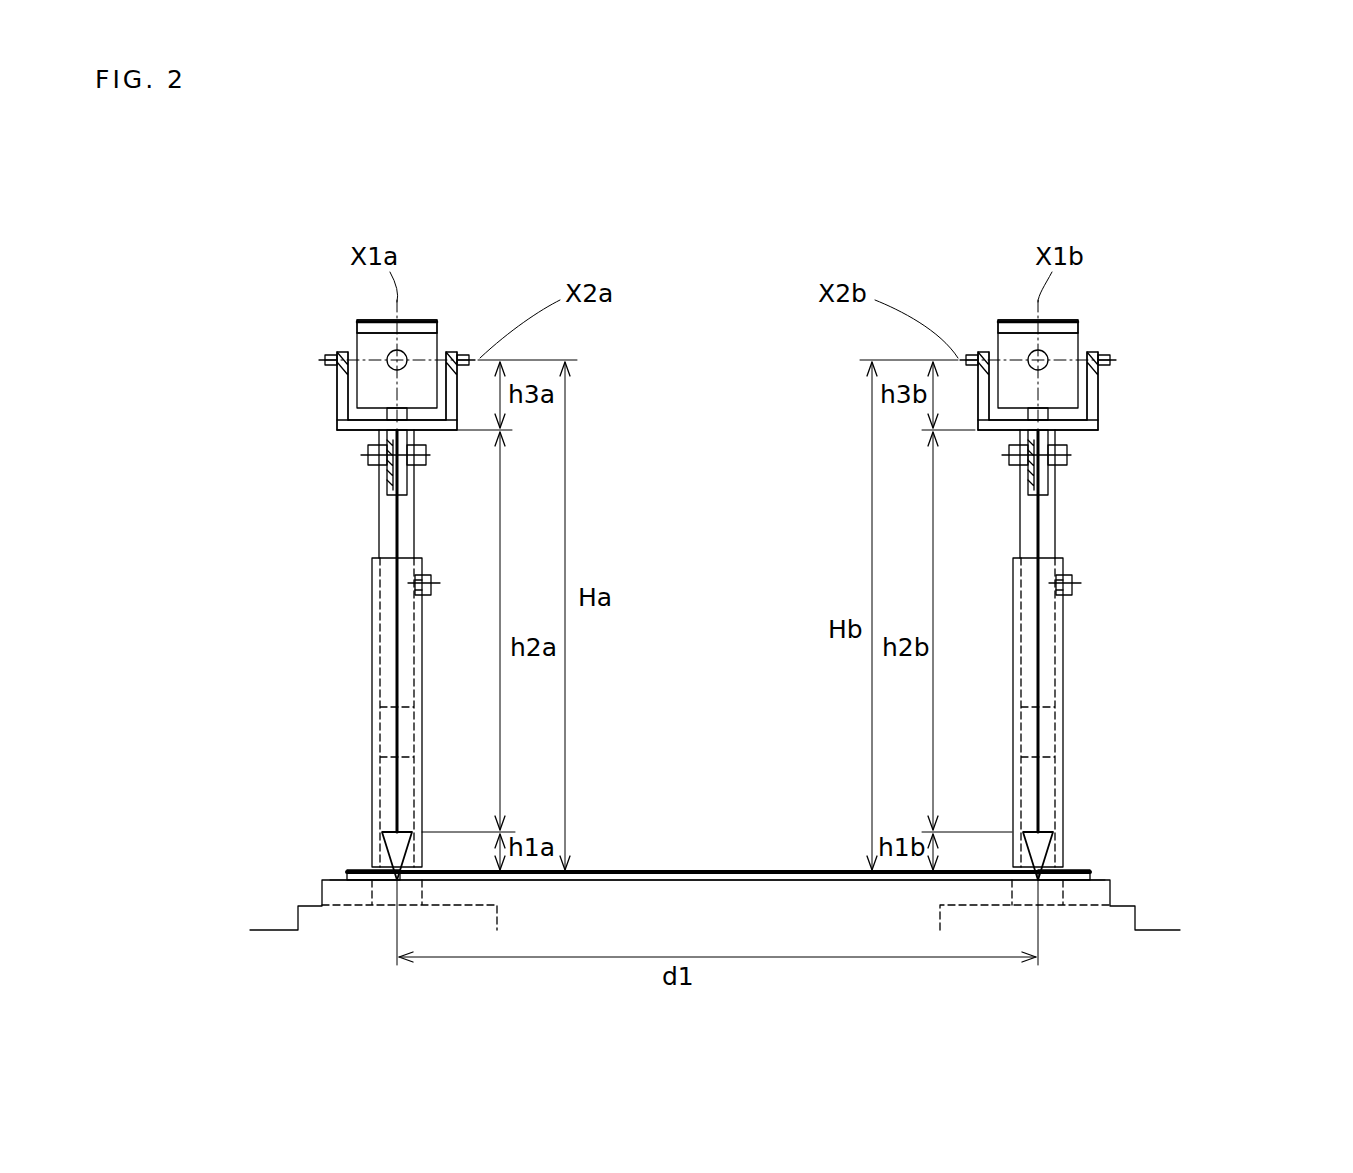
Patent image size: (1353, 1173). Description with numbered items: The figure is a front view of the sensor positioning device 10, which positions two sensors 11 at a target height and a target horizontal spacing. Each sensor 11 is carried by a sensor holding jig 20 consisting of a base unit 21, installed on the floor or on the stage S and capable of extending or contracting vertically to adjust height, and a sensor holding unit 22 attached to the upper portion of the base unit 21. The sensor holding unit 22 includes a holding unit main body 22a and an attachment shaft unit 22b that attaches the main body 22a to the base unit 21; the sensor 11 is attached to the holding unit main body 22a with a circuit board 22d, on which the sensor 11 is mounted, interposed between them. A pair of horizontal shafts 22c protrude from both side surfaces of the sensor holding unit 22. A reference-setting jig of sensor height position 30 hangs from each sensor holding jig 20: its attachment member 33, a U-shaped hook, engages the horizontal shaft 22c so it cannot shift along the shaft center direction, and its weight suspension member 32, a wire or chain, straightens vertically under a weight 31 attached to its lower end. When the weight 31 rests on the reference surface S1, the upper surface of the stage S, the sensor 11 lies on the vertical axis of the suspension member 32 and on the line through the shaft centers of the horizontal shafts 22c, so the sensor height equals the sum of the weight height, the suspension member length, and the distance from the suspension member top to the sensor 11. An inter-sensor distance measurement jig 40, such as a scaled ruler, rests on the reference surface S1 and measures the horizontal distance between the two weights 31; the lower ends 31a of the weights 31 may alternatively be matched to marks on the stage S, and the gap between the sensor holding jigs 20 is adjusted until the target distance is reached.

The sensor positioning device 10 is at (226, 255).
The sensor 11 is at (390, 368).
The sensor holding jig 20 is at (628, 462).
The base unit 21 is at (418, 510).
The sensor holding unit 22 is at (717, 397).
The holding unit main body 22a is at (438, 333).
The attachment shaft unit 22b is at (372, 413).
The horizontal shaft 22c is at (469, 357).
The circuit board 22d is at (358, 321).
The reference-setting jig of sensor height position 30 is at (227, 588).
The weight 31 is at (385, 878).
The lower end of weight 31a is at (347, 876).
The weight suspension member 32 is at (376, 637).
The attachment member 33 is at (340, 432).
The inter-sensor distance measurement jig 40 is at (643, 871).
The stage S is at (322, 893).
The reference surface S1 is at (683, 880).